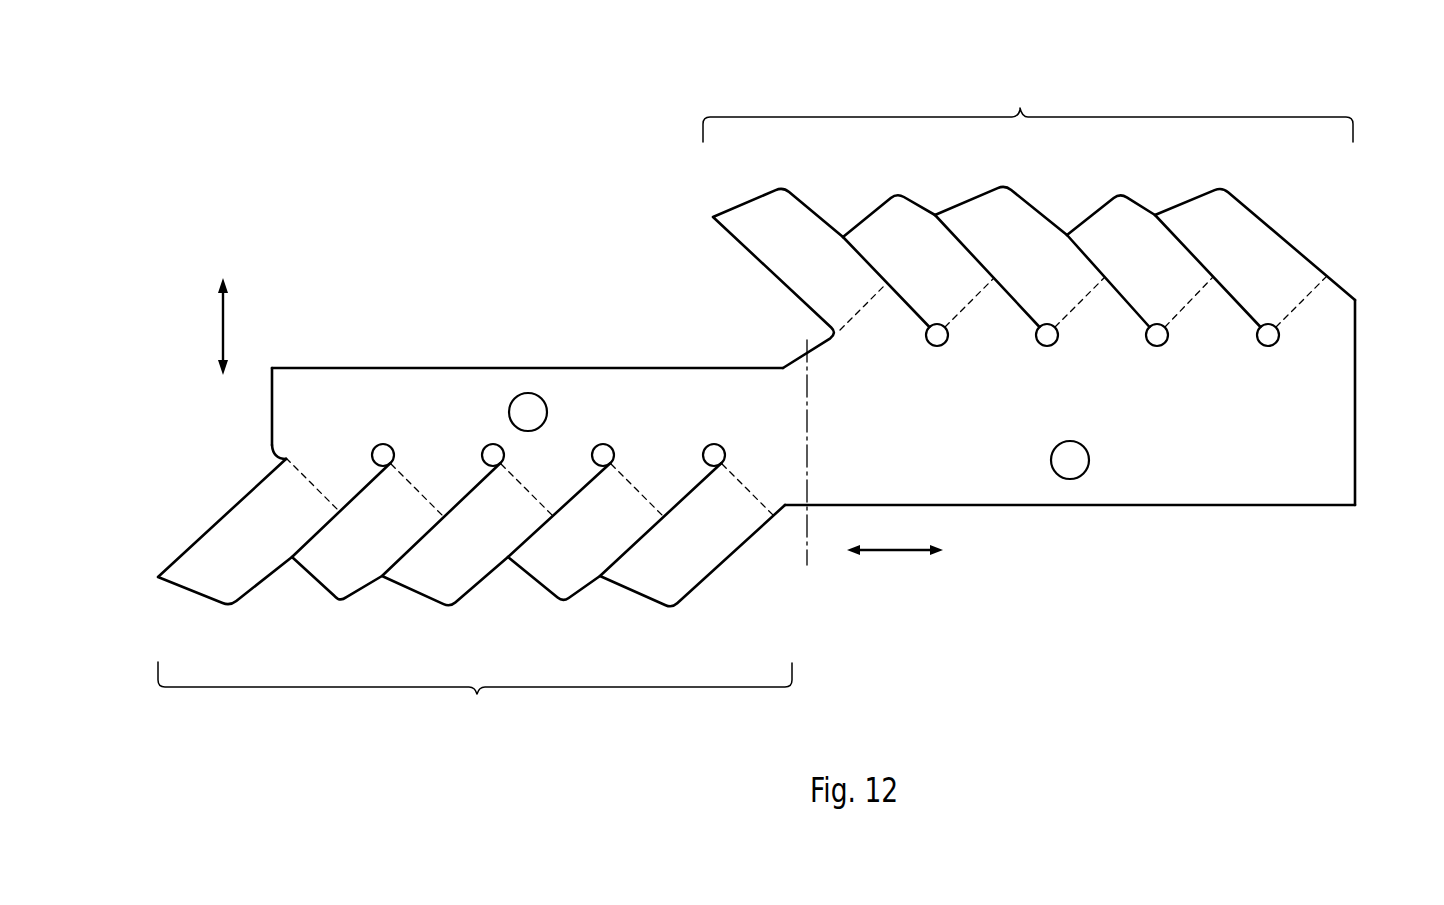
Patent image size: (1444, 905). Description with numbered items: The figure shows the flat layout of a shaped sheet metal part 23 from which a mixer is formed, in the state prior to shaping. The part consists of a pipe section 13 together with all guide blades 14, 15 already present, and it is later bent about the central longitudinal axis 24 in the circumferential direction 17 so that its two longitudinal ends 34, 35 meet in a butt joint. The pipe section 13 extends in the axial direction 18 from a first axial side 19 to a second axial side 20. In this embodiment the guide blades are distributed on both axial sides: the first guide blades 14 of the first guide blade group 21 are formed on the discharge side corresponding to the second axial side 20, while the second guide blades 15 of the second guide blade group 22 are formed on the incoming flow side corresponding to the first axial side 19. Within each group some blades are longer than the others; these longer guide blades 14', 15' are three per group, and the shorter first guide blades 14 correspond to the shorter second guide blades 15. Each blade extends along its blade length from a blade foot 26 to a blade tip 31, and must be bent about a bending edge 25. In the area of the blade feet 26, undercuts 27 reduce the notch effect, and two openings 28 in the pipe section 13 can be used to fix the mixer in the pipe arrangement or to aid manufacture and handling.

The pipe section 13 is at (1218, 480).
The first guide blade 14 is at (451, 531).
The longer first guide blade 14' is at (471, 532).
The second guide blade 15 is at (1001, 261).
The longer second guide blade 15' is at (1034, 277).
The circumferential direction 17 is at (897, 556).
The axial direction 18 is at (222, 323).
The first axial side 19 is at (457, 367).
The second axial side 20 is at (1140, 507).
The first guide blade group 21 is at (477, 698).
The second guide blade group 22 is at (1020, 108).
The shaped sheet metal part 23 is at (400, 218).
The central longitudinal axis 24 is at (813, 447).
The bending edge 25 is at (306, 488).
The blade foot 26 is at (335, 487).
The undercut 27 is at (379, 445).
The opening 28 is at (525, 410).
The blade tip 31 is at (158, 578).
The longitudinal end 34 is at (272, 405).
The longitudinal end 35 is at (1357, 403).